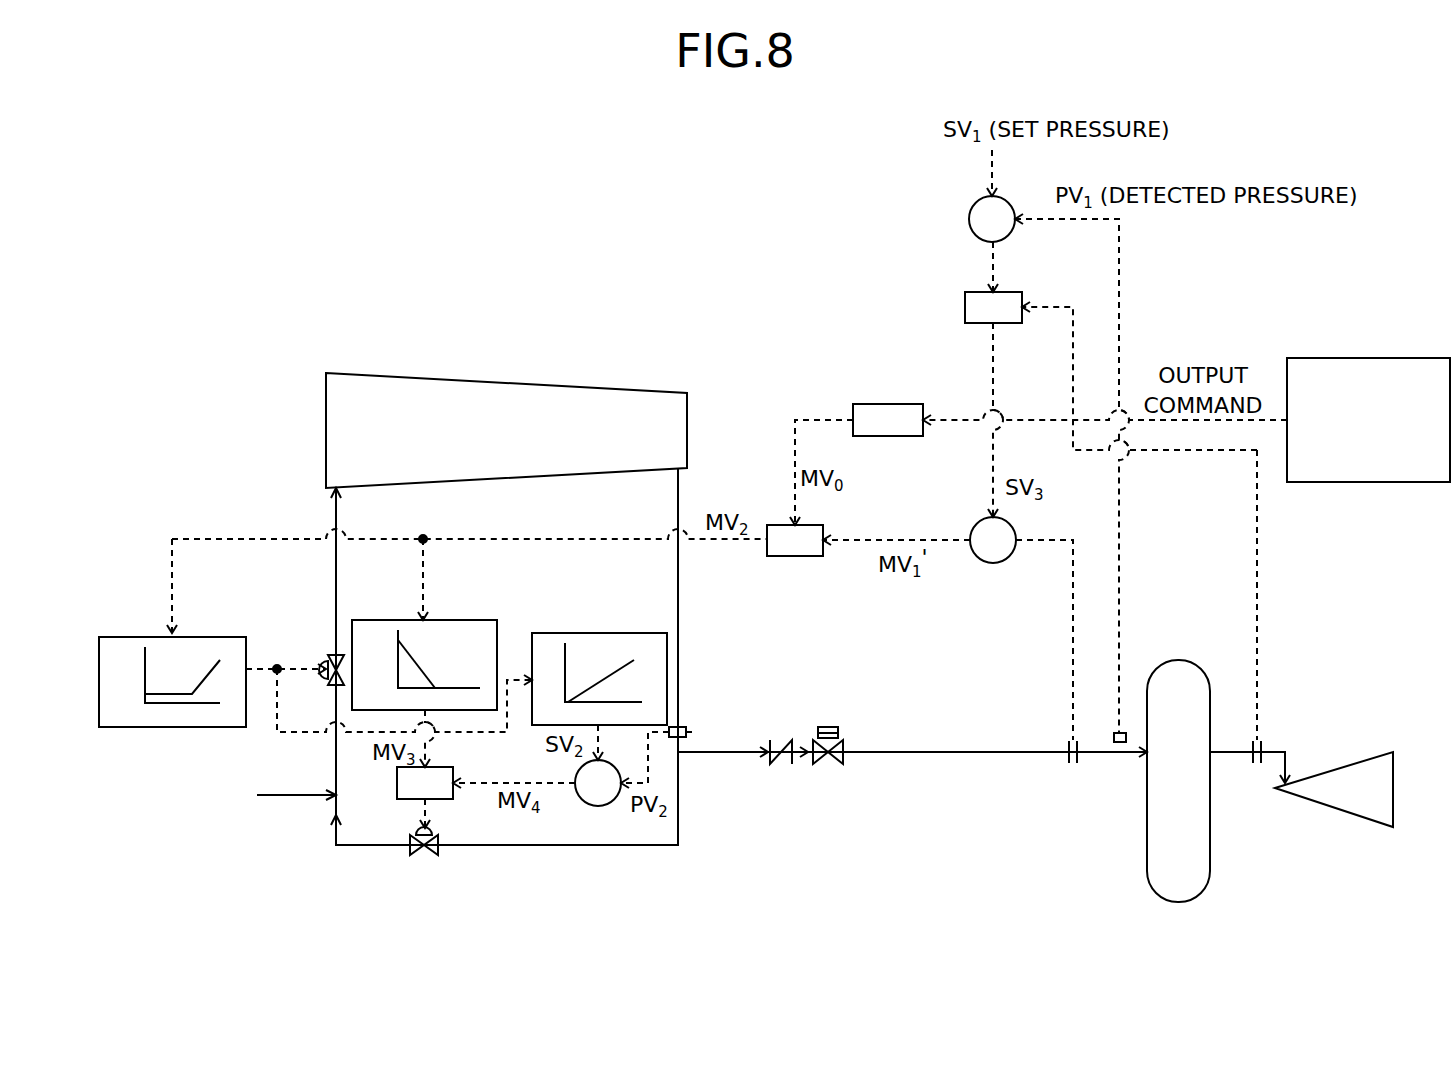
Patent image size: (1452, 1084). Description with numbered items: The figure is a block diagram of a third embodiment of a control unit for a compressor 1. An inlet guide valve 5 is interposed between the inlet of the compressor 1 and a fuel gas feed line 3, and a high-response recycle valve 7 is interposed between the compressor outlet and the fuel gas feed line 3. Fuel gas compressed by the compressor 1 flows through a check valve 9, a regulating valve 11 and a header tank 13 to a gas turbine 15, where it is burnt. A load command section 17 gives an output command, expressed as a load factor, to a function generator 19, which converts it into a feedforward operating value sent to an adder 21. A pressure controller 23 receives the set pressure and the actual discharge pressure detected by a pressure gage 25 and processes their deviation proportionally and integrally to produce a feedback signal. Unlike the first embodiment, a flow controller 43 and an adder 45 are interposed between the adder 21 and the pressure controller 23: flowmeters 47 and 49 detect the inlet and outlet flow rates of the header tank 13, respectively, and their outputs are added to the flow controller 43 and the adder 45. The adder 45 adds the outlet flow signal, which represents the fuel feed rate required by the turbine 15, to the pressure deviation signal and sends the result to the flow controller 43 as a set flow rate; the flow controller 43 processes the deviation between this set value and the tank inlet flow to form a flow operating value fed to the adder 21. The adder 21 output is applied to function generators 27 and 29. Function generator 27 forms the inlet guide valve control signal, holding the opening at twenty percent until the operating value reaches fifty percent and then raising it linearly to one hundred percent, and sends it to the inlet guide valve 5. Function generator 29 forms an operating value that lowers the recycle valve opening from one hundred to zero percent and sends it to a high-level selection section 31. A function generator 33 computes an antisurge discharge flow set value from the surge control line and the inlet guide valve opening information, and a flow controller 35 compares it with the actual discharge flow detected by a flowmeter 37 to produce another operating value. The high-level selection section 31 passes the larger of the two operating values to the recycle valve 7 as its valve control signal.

The compressor 1 is at (402, 373).
The fuel gas feed line 3 is at (279, 802).
The IGV 5 is at (322, 678).
The RCV 7 is at (447, 853).
The check valve 9 is at (782, 764).
The regulating valve 11 is at (832, 764).
The header tank 13 is at (1198, 846).
The gas turbine 15 is at (1378, 752).
The load command section 17 is at (1343, 358).
The function generator 19 is at (887, 404).
The adder 21 is at (803, 560).
The pressure controller 23 is at (966, 220).
The pressure gage 25 is at (1119, 745).
The function generator 27 is at (128, 637).
The function generator 29 is at (381, 620).
The high-level selection section 31 is at (396, 790).
The function generator 33 is at (528, 648).
The flow controller 35 is at (600, 806).
The flowmeter 37 is at (684, 725).
The flow controller 43 is at (982, 565).
The adder 45 is at (962, 308).
The flowmeter 47 is at (1067, 765).
The flowmeter 49 is at (1252, 765).